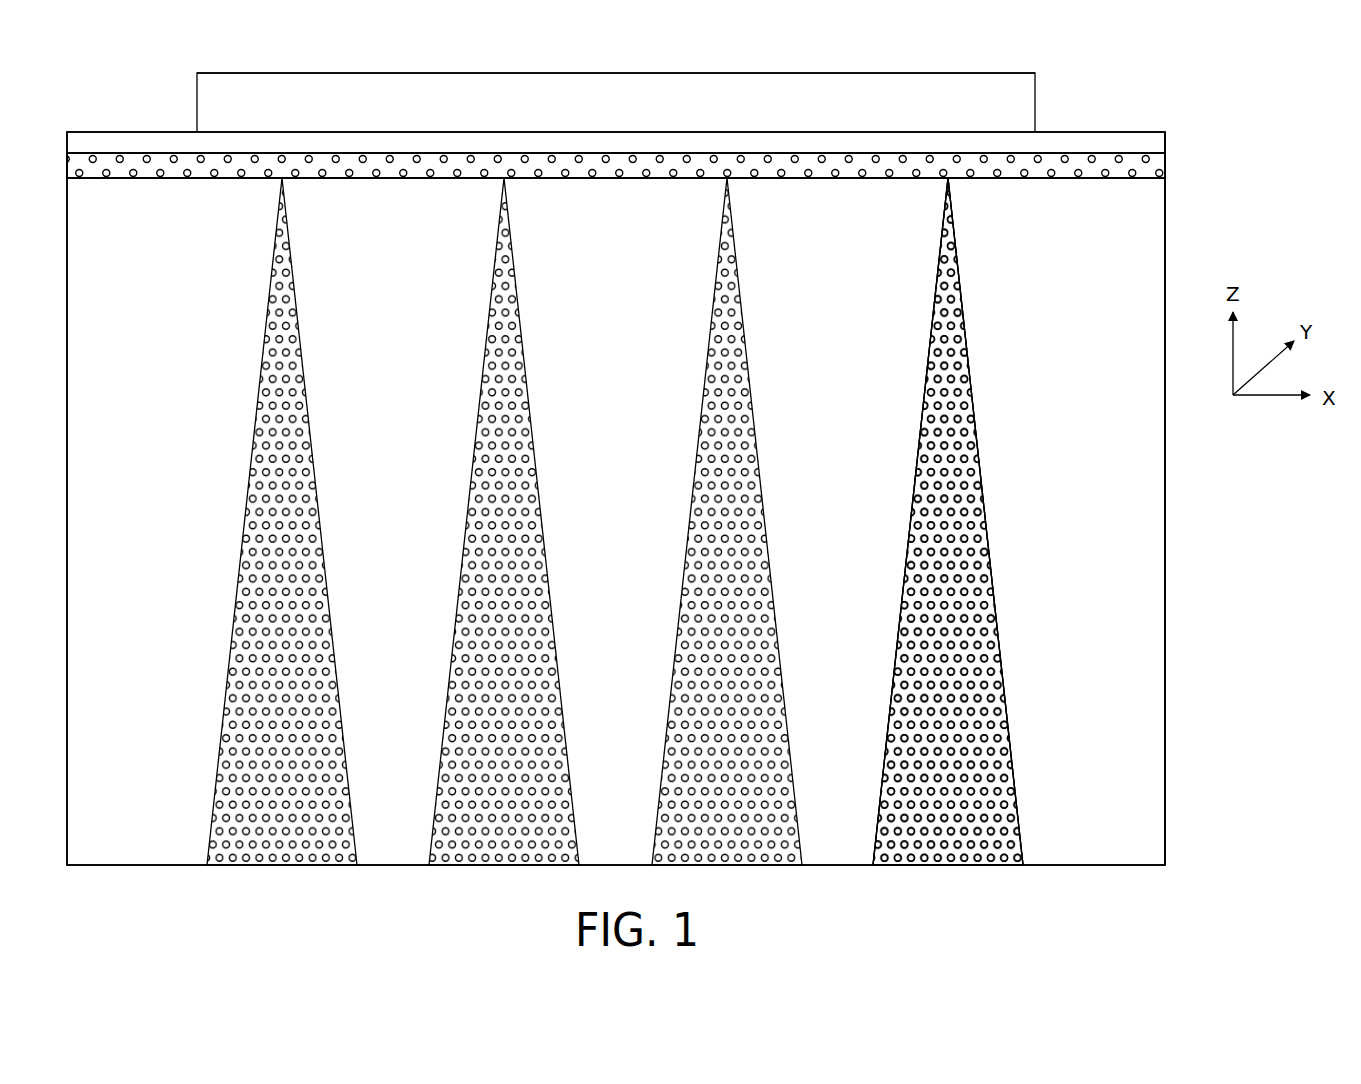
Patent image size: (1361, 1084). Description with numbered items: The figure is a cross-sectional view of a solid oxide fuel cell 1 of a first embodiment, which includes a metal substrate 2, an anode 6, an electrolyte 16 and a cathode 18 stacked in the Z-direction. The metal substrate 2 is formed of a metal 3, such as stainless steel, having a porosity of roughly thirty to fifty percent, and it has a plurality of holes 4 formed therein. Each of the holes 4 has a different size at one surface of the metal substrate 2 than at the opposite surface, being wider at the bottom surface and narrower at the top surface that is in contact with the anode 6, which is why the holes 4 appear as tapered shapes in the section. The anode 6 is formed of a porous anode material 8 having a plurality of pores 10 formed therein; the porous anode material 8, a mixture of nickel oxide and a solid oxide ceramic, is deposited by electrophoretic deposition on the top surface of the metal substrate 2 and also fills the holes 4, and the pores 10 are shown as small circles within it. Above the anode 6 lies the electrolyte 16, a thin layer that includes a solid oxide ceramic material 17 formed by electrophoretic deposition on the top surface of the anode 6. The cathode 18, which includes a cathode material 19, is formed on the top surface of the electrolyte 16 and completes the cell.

The solid oxide fuel cell 1 is at (125, 96).
The metal substrate 2 is at (1165, 572).
The metal 3 is at (1113, 488).
The holes 4 is at (1000, 637).
The anode 6 is at (1165, 172).
The porous anode material 8 is at (1143, 178).
The pores 10 is at (1143, 165).
The electrolyte 16 is at (1165, 140).
The solid oxide ceramic material 17 is at (1135, 142).
The cathode 18 is at (1035, 113).
The cathode material 19 is at (998, 91).